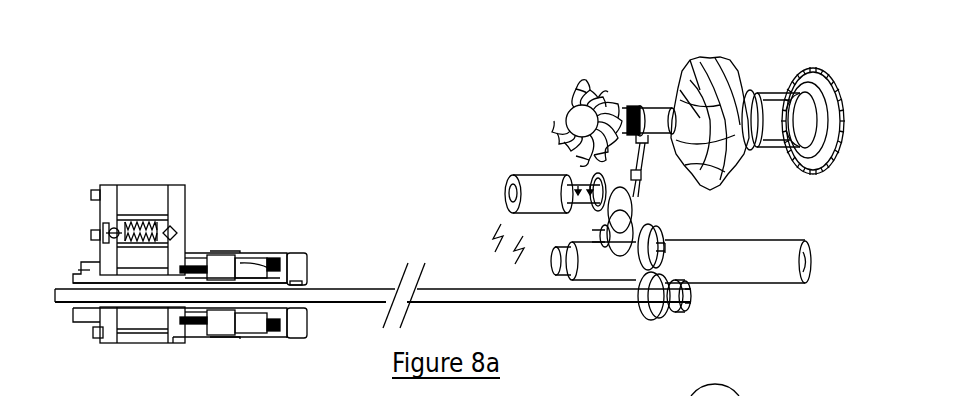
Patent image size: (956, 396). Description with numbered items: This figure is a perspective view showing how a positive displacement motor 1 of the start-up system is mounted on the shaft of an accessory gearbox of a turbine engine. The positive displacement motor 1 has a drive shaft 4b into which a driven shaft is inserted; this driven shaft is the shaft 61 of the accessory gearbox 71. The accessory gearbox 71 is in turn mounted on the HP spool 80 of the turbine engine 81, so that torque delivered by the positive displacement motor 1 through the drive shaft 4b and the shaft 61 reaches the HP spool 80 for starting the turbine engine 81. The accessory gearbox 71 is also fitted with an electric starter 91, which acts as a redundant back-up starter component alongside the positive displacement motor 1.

The positive displacement motor 1 is at (256, 200).
The drive shaft 4b is at (237, 277).
The shaft 61 is at (358, 293).
The accessory gearbox 71 is at (542, 135).
The HP spool 80 is at (652, 70).
The turbine engine 81 is at (825, 62).
The electric starter 91 is at (530, 180).